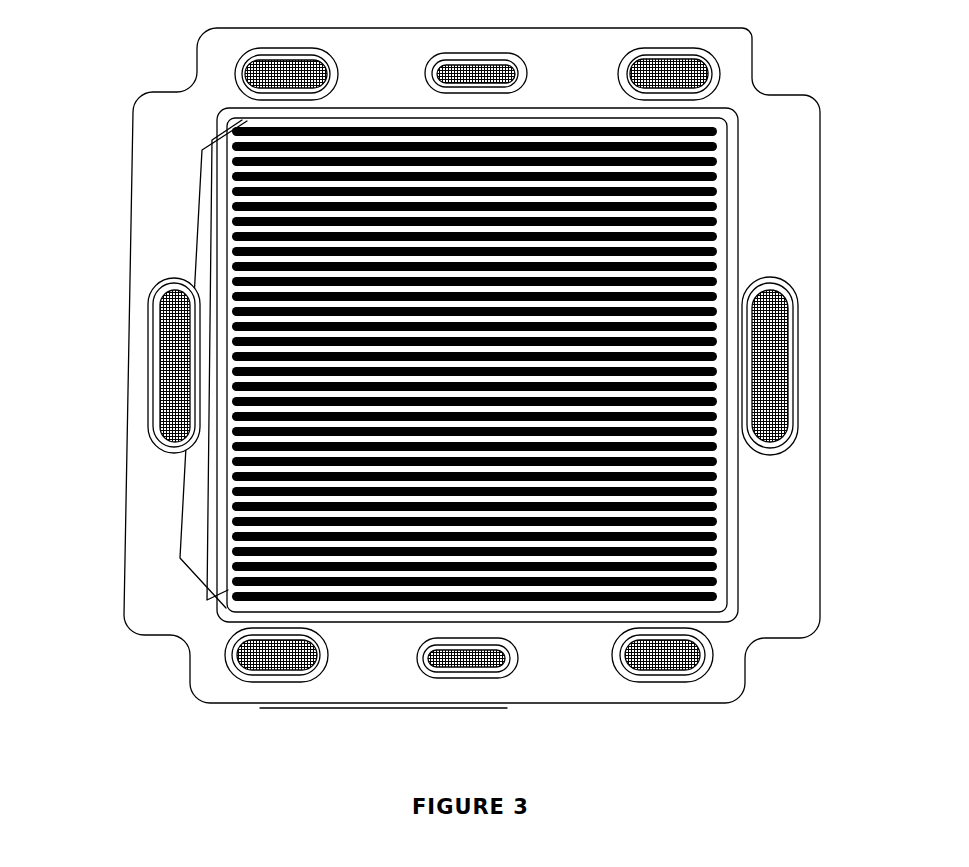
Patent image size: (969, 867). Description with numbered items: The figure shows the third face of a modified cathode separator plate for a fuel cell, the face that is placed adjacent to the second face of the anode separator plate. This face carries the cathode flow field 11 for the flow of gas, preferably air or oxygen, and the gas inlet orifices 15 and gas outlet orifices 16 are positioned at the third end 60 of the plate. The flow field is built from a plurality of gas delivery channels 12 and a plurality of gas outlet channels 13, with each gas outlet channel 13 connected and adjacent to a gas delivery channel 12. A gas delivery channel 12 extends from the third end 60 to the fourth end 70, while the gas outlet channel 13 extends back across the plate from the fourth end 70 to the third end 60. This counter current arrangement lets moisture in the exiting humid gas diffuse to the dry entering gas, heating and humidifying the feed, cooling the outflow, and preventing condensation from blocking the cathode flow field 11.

The cathode flow field 11 is at (192, 223).
The gas delivery channel 12 is at (385, 567).
The gas outlet channel 13 is at (474, 442).
The gas inlet orifice 15 is at (226, 607).
The gas outlet orifice 16 is at (234, 162).
The third end 60 is at (468, 368).
The fourth end 70 is at (810, 45).